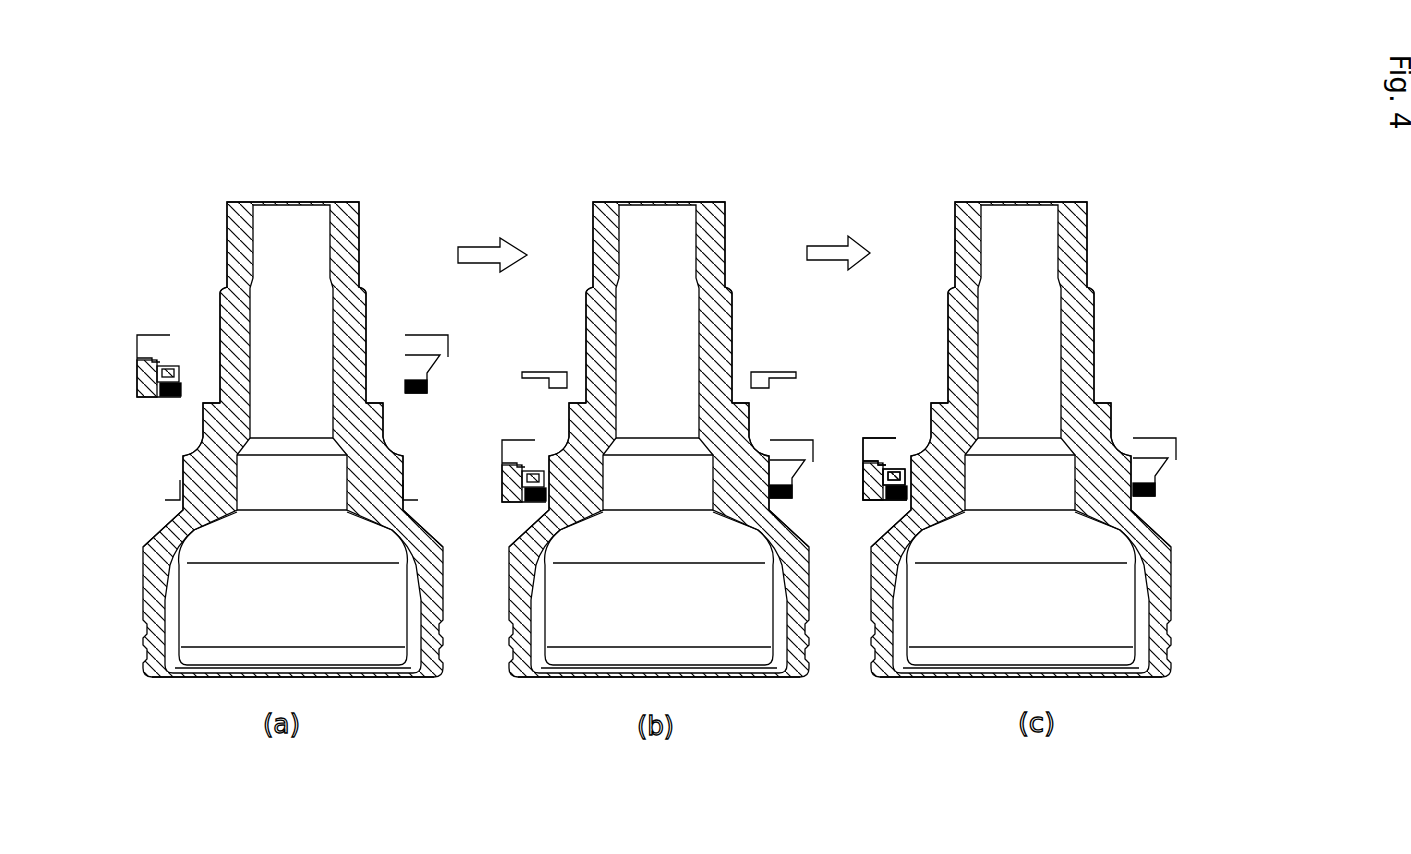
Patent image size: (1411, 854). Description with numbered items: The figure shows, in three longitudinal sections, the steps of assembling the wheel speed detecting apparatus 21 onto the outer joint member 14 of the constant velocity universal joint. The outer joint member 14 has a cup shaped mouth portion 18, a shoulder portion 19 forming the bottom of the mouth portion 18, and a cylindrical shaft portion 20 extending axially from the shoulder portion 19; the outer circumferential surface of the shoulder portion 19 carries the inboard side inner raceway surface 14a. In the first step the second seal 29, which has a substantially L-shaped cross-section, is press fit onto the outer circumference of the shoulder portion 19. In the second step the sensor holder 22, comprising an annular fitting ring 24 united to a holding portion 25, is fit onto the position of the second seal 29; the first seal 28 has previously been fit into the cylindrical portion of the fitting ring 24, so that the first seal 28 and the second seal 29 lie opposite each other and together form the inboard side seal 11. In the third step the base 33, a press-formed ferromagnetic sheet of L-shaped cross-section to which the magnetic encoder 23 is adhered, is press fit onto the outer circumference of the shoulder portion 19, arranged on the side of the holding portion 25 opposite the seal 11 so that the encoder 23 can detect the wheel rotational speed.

The inboard side seal 11 is at (541, 506).
The outer joint member 14 is at (446, 578).
The inner raceway surface 14a is at (368, 398).
The mouth portion 18 is at (433, 673).
The shoulder portion 19 is at (380, 473).
The shaft portion 20 is at (348, 327).
The wheel speed detecting apparatus 21 is at (860, 493).
The sensor holder 22 is at (134, 366).
The magnetic encoder 23 is at (791, 381).
The fitting ring 24 is at (135, 342).
The holding portion 25 is at (150, 398).
The first seal 28 is at (172, 398).
The second seal 29 is at (170, 497).
The base 33 is at (790, 374).